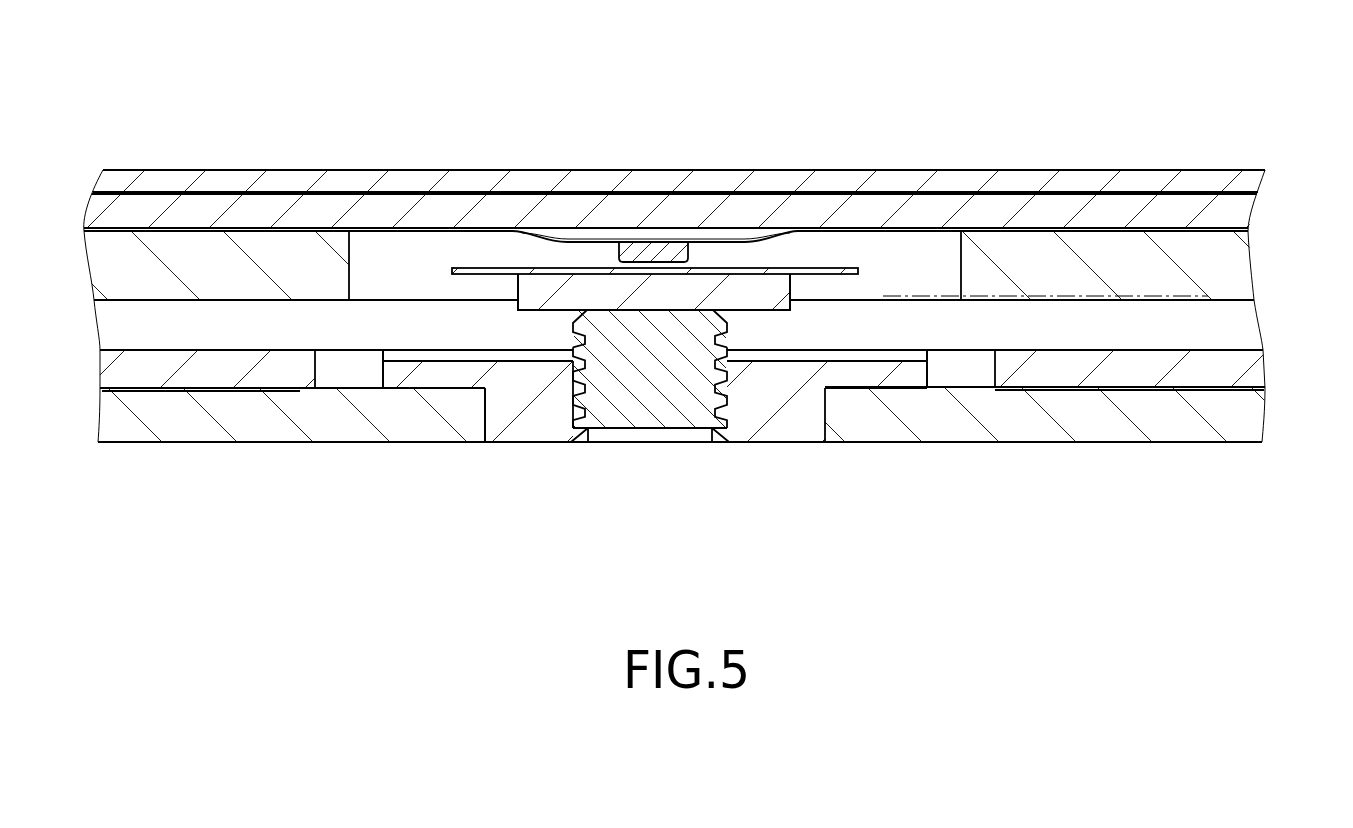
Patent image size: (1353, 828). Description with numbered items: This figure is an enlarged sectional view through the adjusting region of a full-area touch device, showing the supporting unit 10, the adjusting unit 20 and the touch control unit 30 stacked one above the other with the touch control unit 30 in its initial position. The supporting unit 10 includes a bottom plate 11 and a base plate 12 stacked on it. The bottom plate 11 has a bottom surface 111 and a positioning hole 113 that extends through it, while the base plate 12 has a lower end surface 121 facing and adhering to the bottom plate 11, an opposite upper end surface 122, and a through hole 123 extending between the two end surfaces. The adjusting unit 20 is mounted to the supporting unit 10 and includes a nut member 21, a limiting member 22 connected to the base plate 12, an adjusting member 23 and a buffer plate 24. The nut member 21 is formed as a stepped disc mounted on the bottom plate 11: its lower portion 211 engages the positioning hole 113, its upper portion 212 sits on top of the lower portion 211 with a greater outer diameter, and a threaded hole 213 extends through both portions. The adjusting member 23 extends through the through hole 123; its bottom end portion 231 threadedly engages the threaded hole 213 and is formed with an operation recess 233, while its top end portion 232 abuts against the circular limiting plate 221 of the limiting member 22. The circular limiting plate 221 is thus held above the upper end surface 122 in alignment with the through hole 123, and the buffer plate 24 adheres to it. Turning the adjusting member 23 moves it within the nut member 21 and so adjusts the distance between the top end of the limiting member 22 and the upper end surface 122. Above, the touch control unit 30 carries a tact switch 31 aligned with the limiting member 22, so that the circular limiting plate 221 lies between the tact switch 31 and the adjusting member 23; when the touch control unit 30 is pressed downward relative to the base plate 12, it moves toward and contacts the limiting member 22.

The supporting unit 10 is at (678, 326).
The bottom plate 11 is at (590, 459).
The bottom surface 111 is at (1120, 442).
The positioning hole 113 is at (483, 402).
The base plate 12 is at (1054, 312).
The lower end surface 121 is at (1120, 382).
The upper end surface 122 is at (1207, 348).
The through hole 123 is at (963, 370).
The adjusting unit 20 is at (663, 465).
The nut member 21 is at (655, 369).
The lower portion 211 is at (792, 423).
The upper portion 212 is at (910, 386).
The threaded hole 213 is at (572, 408).
The limiting member 22 is at (768, 288).
The circular limiting plate 221 is at (654, 292).
The adjusting member 23 is at (637, 326).
The bottom end portion 231 is at (675, 422).
The top end portion 232 is at (690, 317).
The operation recess 233 is at (618, 430).
The buffer plate 24 is at (490, 268).
The touch control unit 30 is at (358, 168).
The tact switch 31 is at (643, 247).